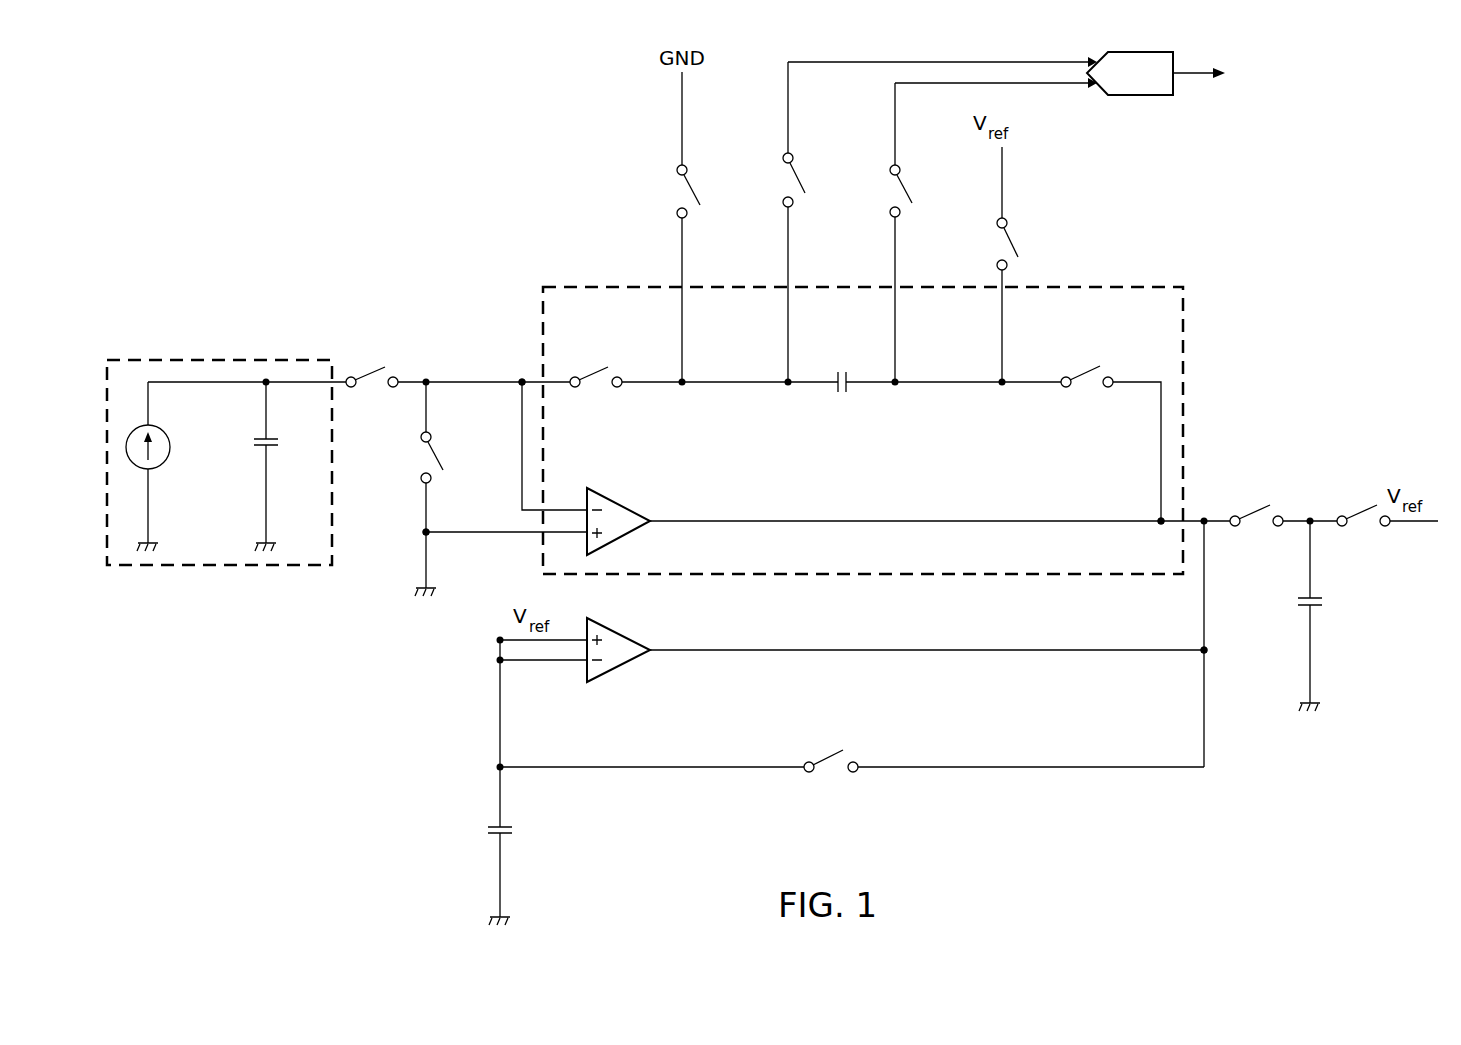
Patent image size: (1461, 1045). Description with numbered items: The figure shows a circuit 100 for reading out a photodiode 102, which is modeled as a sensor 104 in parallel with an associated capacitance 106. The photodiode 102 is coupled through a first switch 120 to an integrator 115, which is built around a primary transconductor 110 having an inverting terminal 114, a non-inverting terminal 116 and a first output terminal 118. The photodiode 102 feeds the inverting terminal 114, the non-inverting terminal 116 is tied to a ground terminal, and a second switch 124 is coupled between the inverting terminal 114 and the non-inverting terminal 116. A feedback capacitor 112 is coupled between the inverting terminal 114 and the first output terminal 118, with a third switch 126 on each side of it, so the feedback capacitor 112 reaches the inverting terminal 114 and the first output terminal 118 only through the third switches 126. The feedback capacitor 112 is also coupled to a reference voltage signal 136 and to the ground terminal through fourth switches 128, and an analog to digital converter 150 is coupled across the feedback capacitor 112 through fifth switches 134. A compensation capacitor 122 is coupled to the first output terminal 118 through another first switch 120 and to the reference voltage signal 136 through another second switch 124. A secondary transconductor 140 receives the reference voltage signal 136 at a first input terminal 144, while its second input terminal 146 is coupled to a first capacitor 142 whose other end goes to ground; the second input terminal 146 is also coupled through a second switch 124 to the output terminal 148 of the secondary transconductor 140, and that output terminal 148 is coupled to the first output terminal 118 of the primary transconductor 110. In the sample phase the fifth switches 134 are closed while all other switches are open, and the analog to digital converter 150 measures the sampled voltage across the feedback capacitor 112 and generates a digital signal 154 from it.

The circuit 100 is at (411, 121).
The photodiode 102 is at (163, 355).
The sensor 104 is at (158, 468).
The associated capacitance Cs 106 is at (252, 443).
The primary transconductor 110 is at (615, 502).
The feedback capacitor CF 112 is at (842, 392).
The inverting terminal 114 is at (518, 378).
The integrator 115 is at (596, 282).
The non-inverting terminal 116 is at (428, 537).
The first output terminal 118 is at (1158, 517).
The first switch S1 120 is at (1255, 512).
The compensation capacitor Cc 122 is at (1320, 600).
The second switch S2 124 is at (1358, 512).
The third switch S3 126 is at (1093, 373).
The fourth switch S4 128 is at (1030, 228).
The fifth switch S5 134 is at (930, 175).
The reference voltage signal Vref 136 is at (1002, 178).
The secondary transconductor 140 is at (615, 667).
The first capacitor CA 142 is at (513, 830).
The first input terminal 144 is at (494, 635).
The second input terminal 146 is at (497, 660).
The output terminal 148 is at (1208, 655).
The analog to digital converter (ADC) 150 is at (1138, 95).
The digital signal 154 is at (1192, 75).